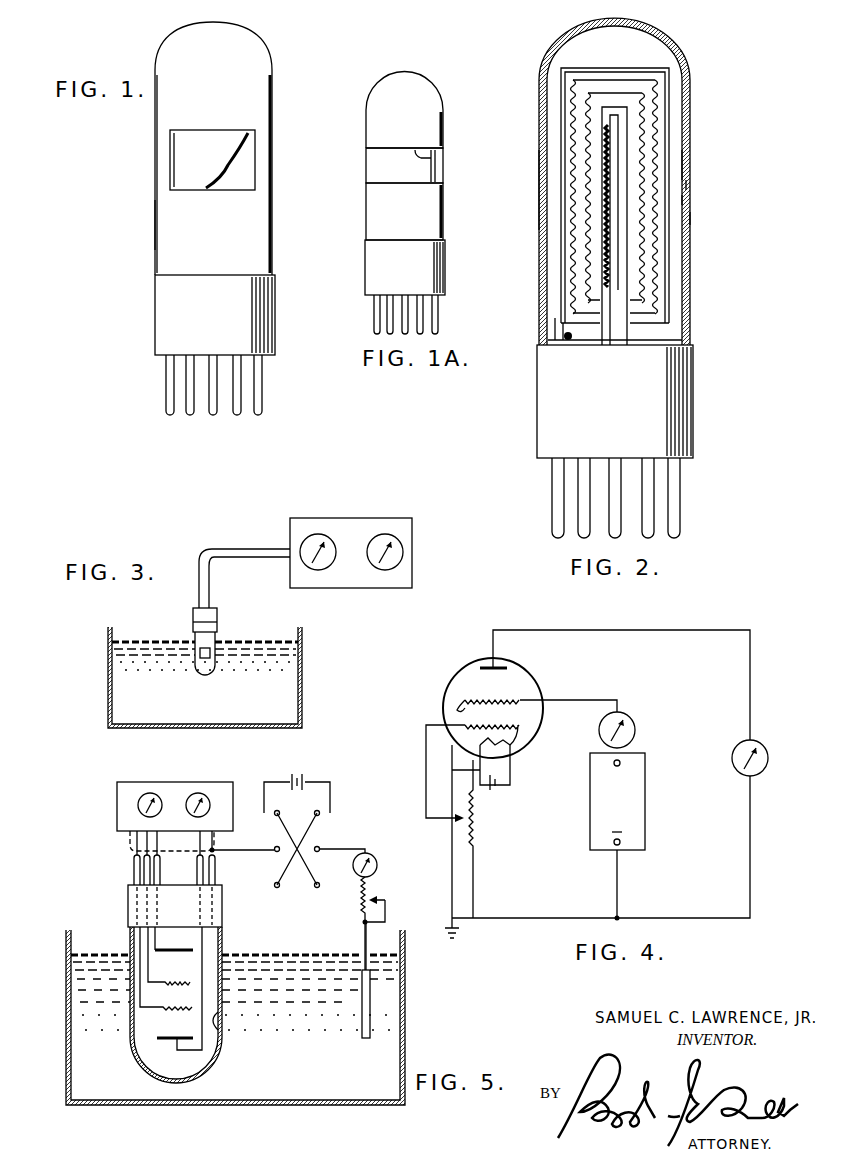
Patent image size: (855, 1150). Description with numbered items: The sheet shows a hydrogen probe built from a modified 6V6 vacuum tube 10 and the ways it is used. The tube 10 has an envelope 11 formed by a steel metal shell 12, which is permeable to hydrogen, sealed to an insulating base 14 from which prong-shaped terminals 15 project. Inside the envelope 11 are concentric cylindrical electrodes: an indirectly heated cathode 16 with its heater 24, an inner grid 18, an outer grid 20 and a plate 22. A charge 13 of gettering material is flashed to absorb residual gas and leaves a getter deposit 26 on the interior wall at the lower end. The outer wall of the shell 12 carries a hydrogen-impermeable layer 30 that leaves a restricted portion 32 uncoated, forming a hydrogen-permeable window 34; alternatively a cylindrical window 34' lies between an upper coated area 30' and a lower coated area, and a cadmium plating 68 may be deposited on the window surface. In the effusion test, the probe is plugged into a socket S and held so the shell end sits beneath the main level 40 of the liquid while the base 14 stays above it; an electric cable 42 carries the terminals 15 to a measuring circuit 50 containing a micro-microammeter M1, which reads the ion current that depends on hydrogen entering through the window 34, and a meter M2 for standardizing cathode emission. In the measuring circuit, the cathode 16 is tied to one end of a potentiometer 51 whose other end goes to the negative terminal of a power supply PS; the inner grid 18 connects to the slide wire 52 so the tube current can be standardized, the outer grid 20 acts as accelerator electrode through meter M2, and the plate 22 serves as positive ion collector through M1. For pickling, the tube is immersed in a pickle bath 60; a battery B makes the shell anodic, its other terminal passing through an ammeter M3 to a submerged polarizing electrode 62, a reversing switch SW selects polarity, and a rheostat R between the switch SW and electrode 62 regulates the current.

In FIG. 1, the vacuum tube 10 is at (278, 67).
In FIG. 2, the vacuum tube 10 is at (693, 86).
In FIG. 3, the vacuum tube 10 is at (217, 642).
In FIG. 1, the envelope 11 is at (154, 229).
In FIG. 2, the envelope 11 is at (540, 188).
In FIG. 3, the envelope 11 is at (204, 672).
In FIG. 4, the envelope 11 is at (541, 691).
In FIG. 2, the metal shell 12 is at (691, 219).
In FIG. 4, the metal shell 12 is at (447, 710).
In FIG. 5, the metal shell 12 is at (222, 1032).
In FIG. 2, the charge of gettering material 13 is at (565, 340).
In FIG. 1, the insulating base 14 is at (276, 327).
In FIG. 1A, the insulating base 14 is at (372, 272).
In FIG. 2, the insulating base 14 is at (694, 405).
In FIG. 3, the insulating base 14 is at (196, 624).
In FIG. 1, the terminal 15 is at (190, 388).
In FIG. 1A, the terminal 15 is at (435, 320).
In FIG. 2, the terminal 15 is at (585, 503).
In FIG. 5, the terminal 15 is at (134, 872).
In FIG. 2, the cathode 16 is at (650, 320).
In FIG. 4, the cathode 16 is at (515, 742).
In FIG. 5, the cathode 16 is at (195, 952).
In FIG. 2, the inner grid 18 is at (643, 279).
In FIG. 4, the inner grid 18 is at (521, 738).
In FIG. 5, the inner grid 18 is at (178, 982).
In FIG. 2, the outer grid 20 is at (656, 133).
In FIG. 4, the outer grid 20 is at (462, 706).
In FIG. 5, the outer grid 20 is at (180, 1012).
In FIG. 2, the plate 22 is at (668, 110).
In FIG. 4, the plate 22 is at (481, 665).
In FIG. 5, the plate 22 is at (170, 1042).
In FIG. 2, the heater 24 is at (617, 233).
In FIG. 4, the heater 24 is at (507, 762).
In FIG. 2, the getter deposit 26 is at (556, 325).
In FIG. 1, the hydrogen-impermeable layer 30 is at (235, 174).
In FIG. 2, the hydrogen-impermeable layer 30 is at (601, 185).
In FIG. 5, the hydrogen-impermeable layer 30 is at (154, 993).
In FIG. 1A, the upper coated area 30' is at (425, 110).
In FIG. 1, the restricted portion 32 is at (210, 157).
In FIG. 2, the restricted portion 32 is at (689, 200).
In FIG. 1, the window 34 is at (190, 160).
In FIG. 2, the window 34 is at (713, 166).
In FIG. 3, the window 34 is at (179, 640).
In FIG. 1A, the cylindrical window 34' is at (425, 161).
In FIG. 3, the main level of the liquid 40 is at (258, 642).
In FIG. 3, the electric cable 42 is at (226, 549).
In FIG. 5, the electric cable 42 is at (130, 840).
In FIG. 3, the measuring circuit 50 is at (362, 518).
In FIG. 5, the measuring circuit 50 is at (117, 811).
In FIG. 4, the potentiometer 51 is at (478, 822).
In FIG. 4, the slide wire 52 is at (458, 822).
In FIG. 5, the pickle bath 60 is at (292, 1092).
In FIG. 5, the polarizing electrode 62 is at (372, 995).
In FIG. 1, the plating 68 is at (248, 156).
In FIG. 2, the plating 68 is at (691, 183).
In FIG. 3, the socket S is at (196, 610).
In FIG. 3, the micro-microammeter M1 is at (305, 563).
In FIG. 4, the micro-microammeter M1 is at (735, 770).
In FIG. 5, the micro-microammeter M1 is at (153, 797).
In FIG. 3, the meter M2 is at (403, 562).
In FIG. 4, the meter M2 is at (636, 738).
In FIG. 5, the meter M2 is at (206, 797).
In FIG. 5, the ammeter M3 is at (376, 847).
In FIG. 4, the power supply PS is at (645, 834).
In FIG. 5, the battery B is at (297, 781).
In FIG. 5, the reversing switch SW is at (297, 884).
In FIG. 5, the rheostat R is at (361, 923).